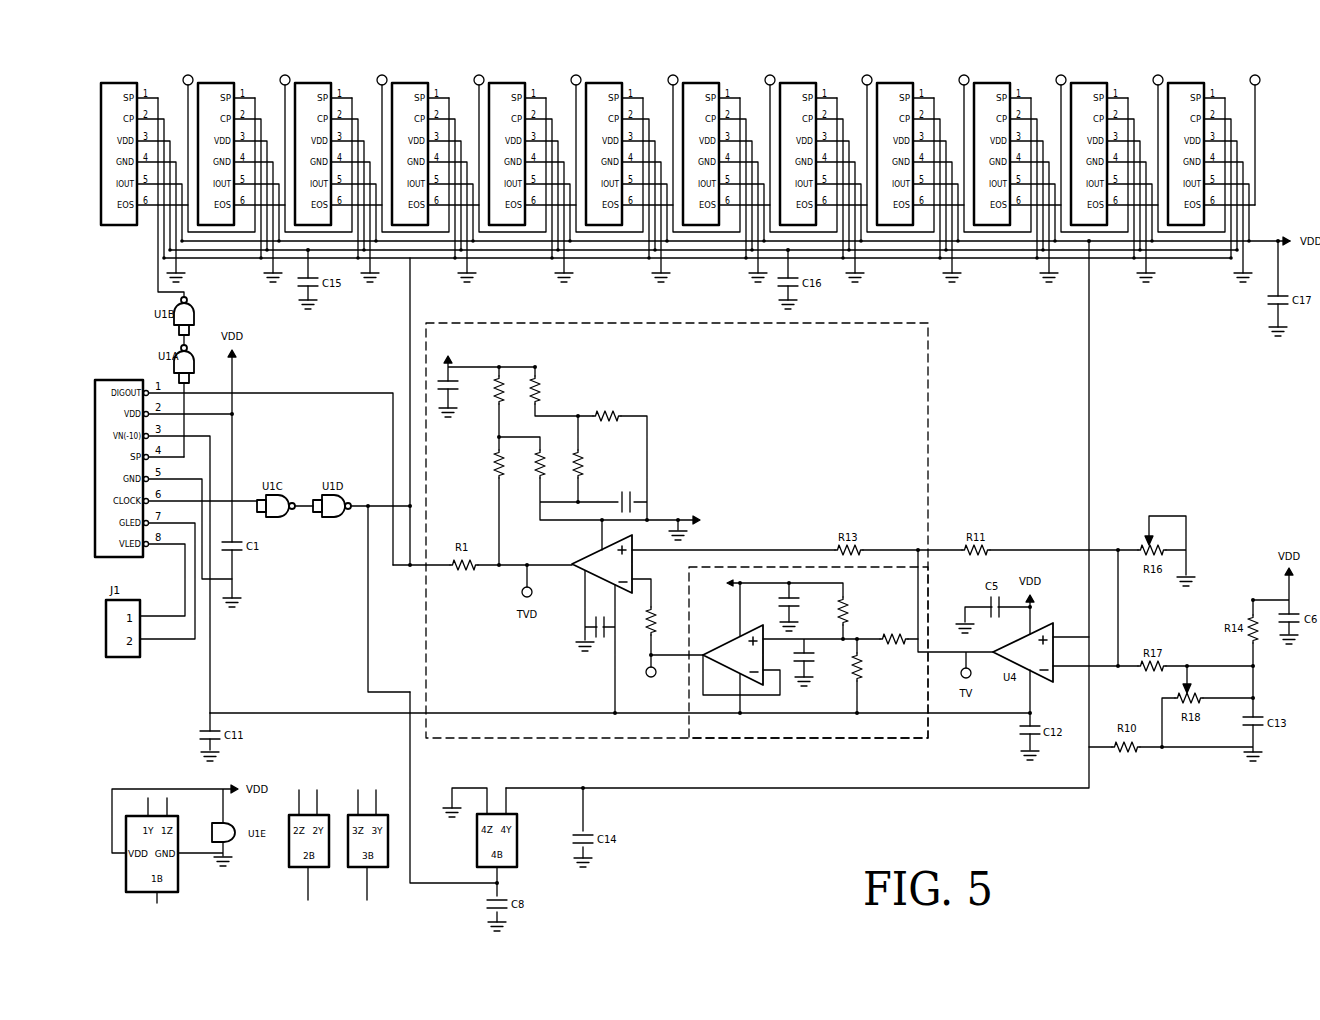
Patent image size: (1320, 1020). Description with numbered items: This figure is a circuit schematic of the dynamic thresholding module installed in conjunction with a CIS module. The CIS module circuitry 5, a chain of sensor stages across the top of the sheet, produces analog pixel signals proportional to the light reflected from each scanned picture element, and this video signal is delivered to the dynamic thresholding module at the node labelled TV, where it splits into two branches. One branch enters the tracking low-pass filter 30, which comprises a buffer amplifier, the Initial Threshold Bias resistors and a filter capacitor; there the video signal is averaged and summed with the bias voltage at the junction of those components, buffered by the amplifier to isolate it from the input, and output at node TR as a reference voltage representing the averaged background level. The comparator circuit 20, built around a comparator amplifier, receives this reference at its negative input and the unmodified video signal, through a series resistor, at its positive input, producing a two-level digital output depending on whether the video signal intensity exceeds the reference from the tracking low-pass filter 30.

The CIS module circuitry 5 is at (1252, 121).
The comparator circuit 20 is at (928, 360).
The tracking low-pass filter circuit 30 is at (832, 741).